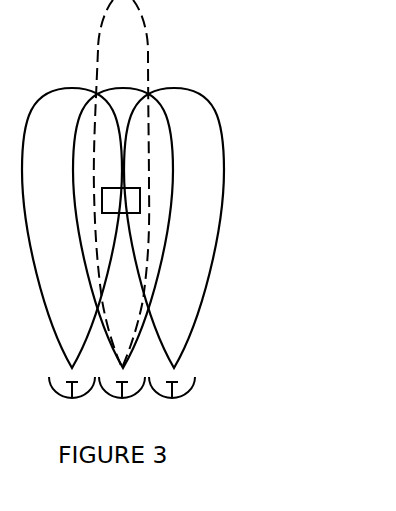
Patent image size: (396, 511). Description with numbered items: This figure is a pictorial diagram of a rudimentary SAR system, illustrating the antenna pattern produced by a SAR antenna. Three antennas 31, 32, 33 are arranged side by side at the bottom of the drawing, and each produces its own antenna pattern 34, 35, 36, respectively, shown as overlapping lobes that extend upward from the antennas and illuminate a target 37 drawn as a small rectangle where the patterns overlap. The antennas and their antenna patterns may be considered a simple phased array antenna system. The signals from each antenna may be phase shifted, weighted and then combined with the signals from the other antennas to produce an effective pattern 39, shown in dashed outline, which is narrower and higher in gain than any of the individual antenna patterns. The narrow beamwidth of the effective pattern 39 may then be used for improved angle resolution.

The antenna 31 is at (72, 398).
The antenna 32 is at (122, 398).
The antenna 33 is at (173, 396).
The antenna pattern 34 is at (80, 88).
The antenna pattern 35 is at (137, 88).
The antenna pattern 36 is at (173, 88).
The target 37 is at (133, 207).
The effective pattern 39 is at (148, 42).